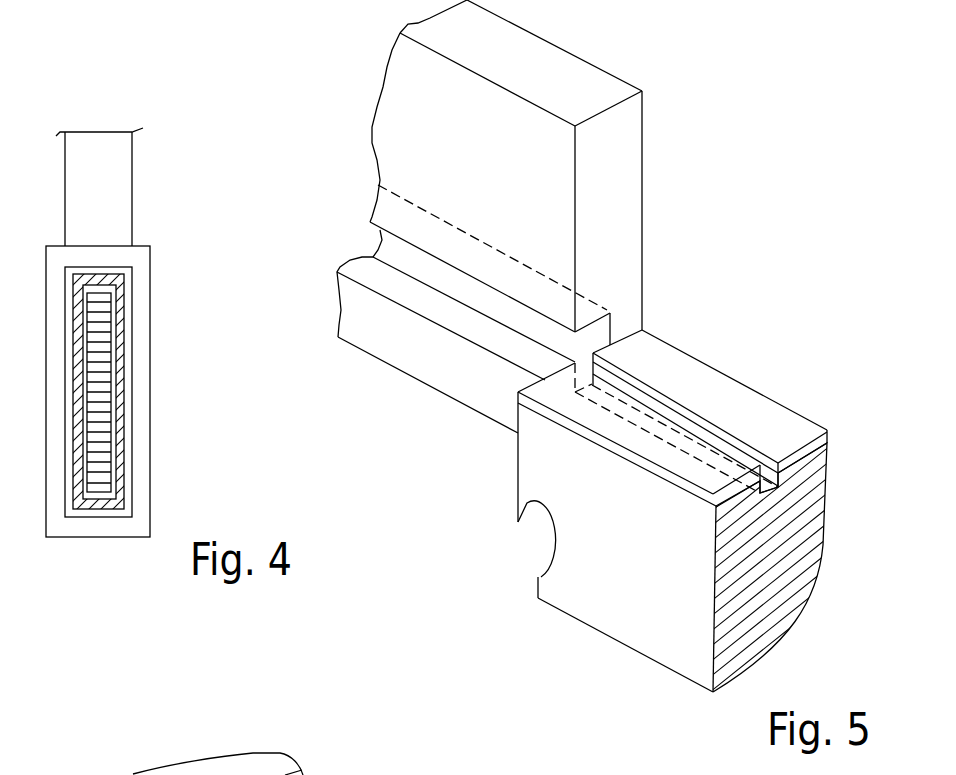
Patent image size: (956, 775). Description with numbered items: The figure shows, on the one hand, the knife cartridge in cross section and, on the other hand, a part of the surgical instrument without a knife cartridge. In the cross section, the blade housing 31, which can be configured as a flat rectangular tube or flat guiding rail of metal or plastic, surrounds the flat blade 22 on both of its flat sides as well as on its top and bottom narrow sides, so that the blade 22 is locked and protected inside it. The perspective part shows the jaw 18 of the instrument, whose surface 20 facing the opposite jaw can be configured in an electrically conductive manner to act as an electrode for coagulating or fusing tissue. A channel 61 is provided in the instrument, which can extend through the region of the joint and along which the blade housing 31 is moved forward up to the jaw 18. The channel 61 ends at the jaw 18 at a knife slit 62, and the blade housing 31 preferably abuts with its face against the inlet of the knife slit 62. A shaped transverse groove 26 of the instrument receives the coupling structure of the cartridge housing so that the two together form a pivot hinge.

In FIG. 5, the jaw 18 is at (615, 560).
In FIG. 5, the surface 20 is at (745, 407).
In FIG. 4, the blade 22 is at (102, 445).
In FIG. 5, the transverse groove 26 is at (537, 540).
In FIG. 4, the blade housing 31 is at (117, 397).
In FIG. 5, the channel 61 is at (522, 328).
In FIG. 5, the knife slit 62 is at (665, 400).